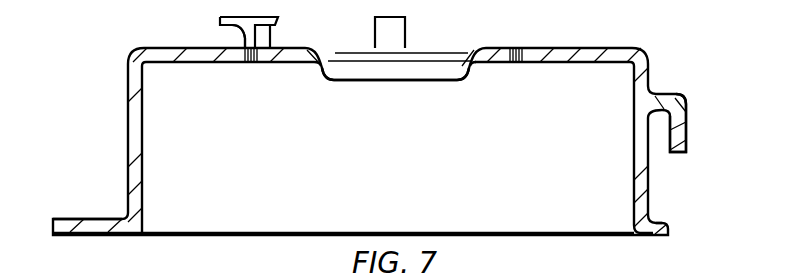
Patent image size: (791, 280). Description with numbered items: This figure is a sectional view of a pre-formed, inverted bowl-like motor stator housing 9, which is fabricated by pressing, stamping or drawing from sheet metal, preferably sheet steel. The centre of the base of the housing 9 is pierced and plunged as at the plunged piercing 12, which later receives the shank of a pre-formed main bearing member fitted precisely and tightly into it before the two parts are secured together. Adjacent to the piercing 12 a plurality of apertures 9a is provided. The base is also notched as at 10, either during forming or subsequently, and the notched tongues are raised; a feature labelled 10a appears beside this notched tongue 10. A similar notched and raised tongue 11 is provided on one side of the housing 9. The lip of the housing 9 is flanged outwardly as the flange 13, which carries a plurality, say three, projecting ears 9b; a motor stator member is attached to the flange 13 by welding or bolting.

The motor stator housing 9 is at (605, 50).
The apertures 9a is at (528, 50).
The projecting ear 9b is at (93, 222).
The notched tongue on base 10 is at (395, 34).
The terminal lug 10a is at (224, 17).
The notched and raised tongue on side 11 is at (676, 116).
The plunged piercing 12 is at (327, 52).
The flange 13 is at (657, 232).